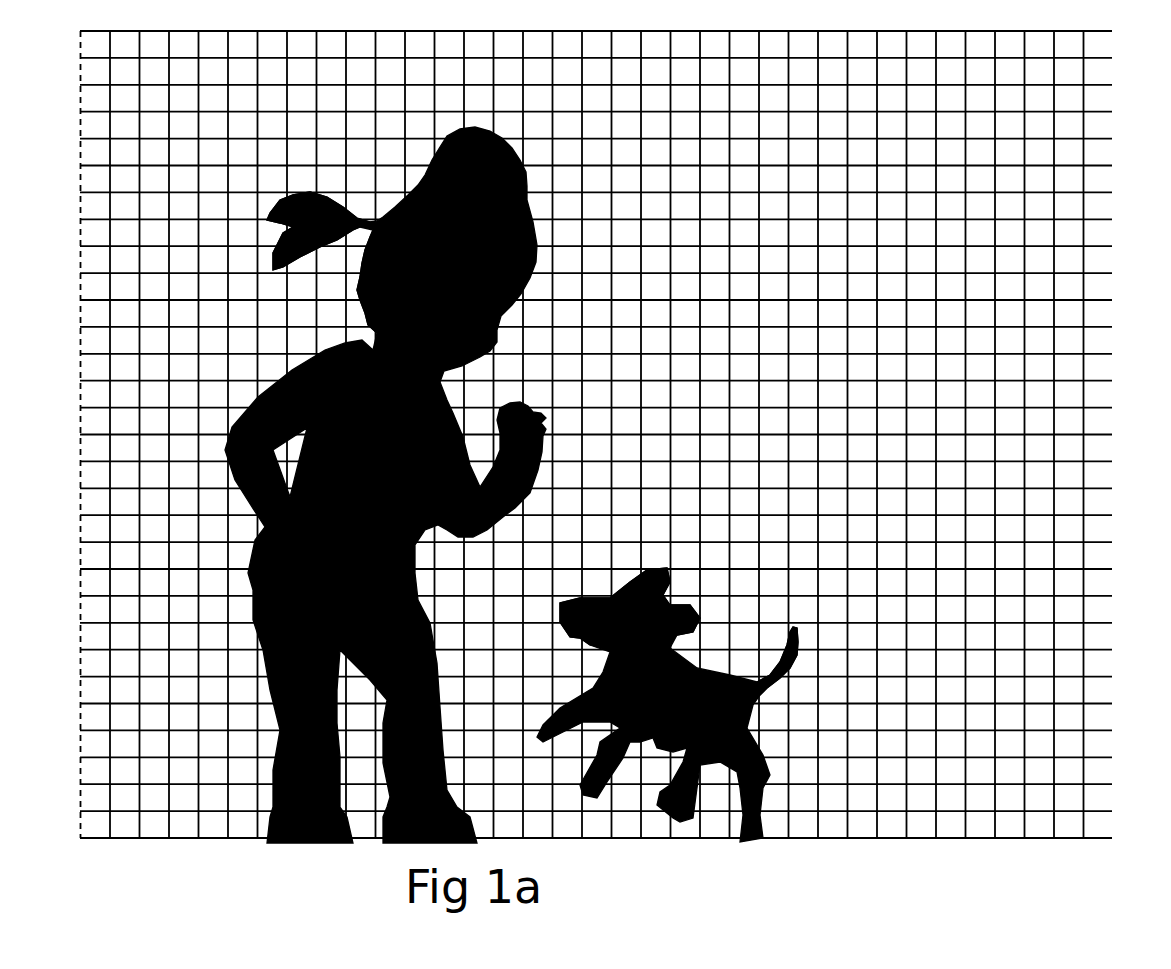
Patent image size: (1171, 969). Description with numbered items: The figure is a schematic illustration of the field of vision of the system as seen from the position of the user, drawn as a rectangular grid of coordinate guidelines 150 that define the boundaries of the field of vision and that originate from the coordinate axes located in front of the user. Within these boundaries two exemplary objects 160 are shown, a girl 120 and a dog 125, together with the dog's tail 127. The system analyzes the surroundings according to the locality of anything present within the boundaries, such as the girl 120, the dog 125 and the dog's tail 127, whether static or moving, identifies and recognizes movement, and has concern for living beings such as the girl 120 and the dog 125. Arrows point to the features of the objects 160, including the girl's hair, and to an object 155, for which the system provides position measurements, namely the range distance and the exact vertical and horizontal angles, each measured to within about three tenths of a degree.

The coordinate guidelines 150 is at (950, 155).
The girl 120 is at (228, 382).
The object 155 is at (346, 183).
The objects 160 is at (681, 530).
The dog 125 is at (766, 606).
The dog's tail 127 is at (811, 655).